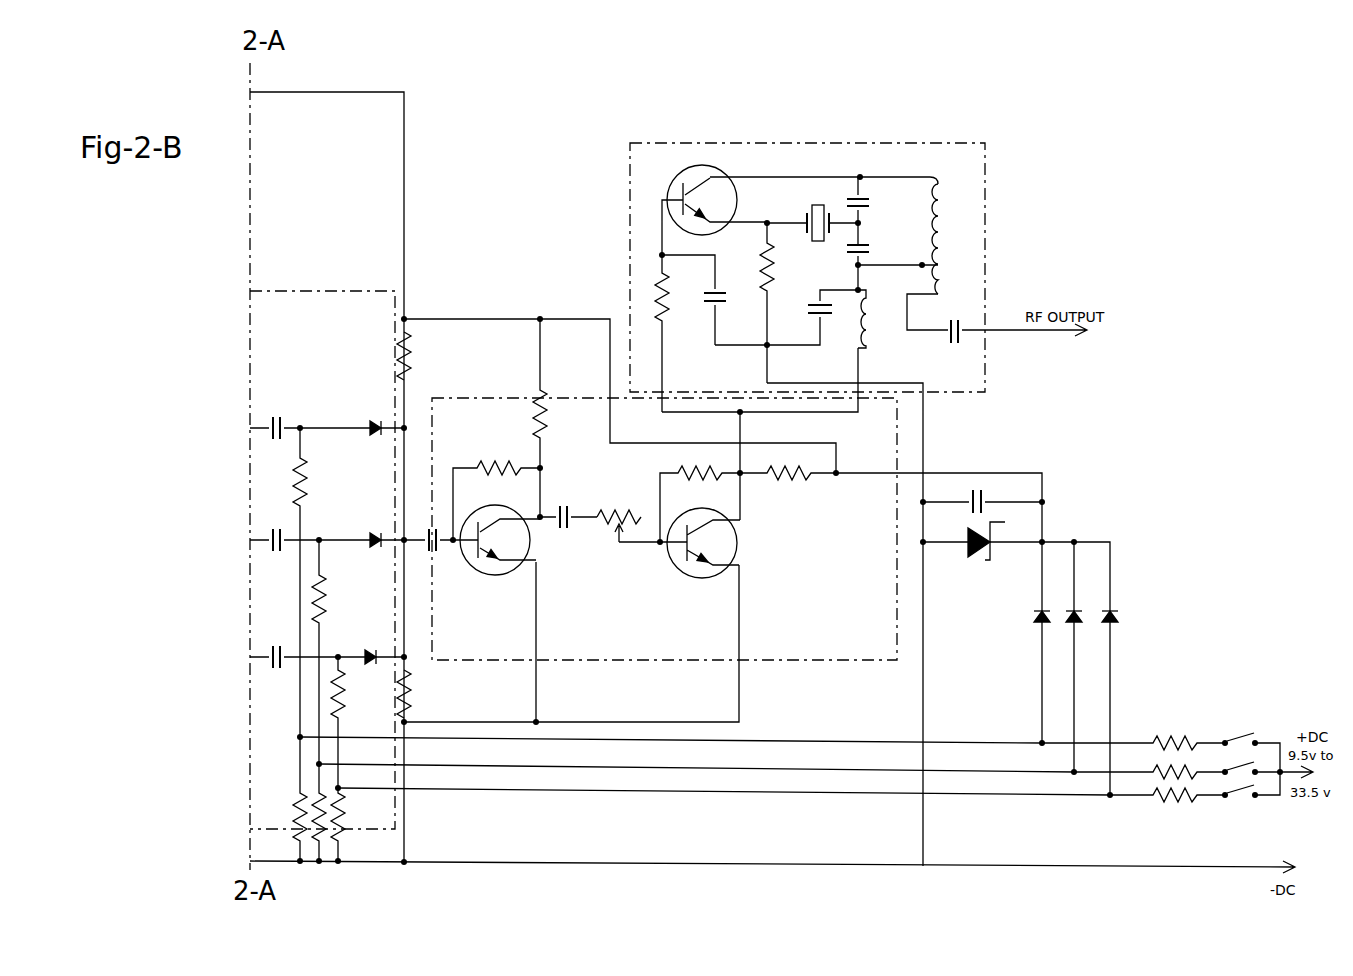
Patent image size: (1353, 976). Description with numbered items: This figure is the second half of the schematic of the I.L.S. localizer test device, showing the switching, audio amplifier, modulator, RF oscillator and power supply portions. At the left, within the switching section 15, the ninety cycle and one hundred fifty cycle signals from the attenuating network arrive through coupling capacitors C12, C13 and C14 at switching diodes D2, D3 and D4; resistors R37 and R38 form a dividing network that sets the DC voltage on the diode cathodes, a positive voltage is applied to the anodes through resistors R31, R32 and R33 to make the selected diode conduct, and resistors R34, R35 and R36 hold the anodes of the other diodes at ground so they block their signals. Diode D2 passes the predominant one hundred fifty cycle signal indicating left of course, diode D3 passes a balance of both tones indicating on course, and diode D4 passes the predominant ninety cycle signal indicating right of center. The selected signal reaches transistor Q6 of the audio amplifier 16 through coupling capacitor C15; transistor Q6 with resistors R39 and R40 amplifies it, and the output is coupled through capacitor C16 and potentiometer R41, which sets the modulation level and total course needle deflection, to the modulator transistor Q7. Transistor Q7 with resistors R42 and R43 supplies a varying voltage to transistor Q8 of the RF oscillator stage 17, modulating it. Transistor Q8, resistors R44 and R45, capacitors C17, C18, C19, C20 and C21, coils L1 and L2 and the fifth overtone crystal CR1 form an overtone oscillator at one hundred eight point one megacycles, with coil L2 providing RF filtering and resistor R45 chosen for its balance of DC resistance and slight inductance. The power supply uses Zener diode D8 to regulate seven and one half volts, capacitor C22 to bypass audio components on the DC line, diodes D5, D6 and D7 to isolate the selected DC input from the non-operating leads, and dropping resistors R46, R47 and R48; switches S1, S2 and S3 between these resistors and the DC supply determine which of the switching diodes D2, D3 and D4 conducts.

The frequency multiplier stage 15 is at (340, 288).
The audio amplifier 16 is at (793, 661).
The RF oscillator stage 17 is at (762, 142).
The coupling capacitor C12 is at (310, 414).
The coupling capacitor C13 is at (310, 528).
The coupling capacitor C14 is at (307, 644).
The coupling capacitor C15 is at (446, 554).
The capacitor C16 is at (568, 532).
The capacitor C17 is at (707, 300).
The capacitor C18 is at (807, 318).
The capacitor C19 is at (877, 210).
The capacitor C20 is at (878, 264).
The capacitor C21 is at (961, 323).
The capacitor C22 is at (982, 496).
The switching diode D2 is at (383, 412).
The switching diode D3 is at (393, 527).
The switching diode D4 is at (381, 642).
The diode D5 is at (1048, 605).
The diode D6 is at (1083, 606).
The diode D7 is at (1120, 607).
The Zener diode D8 is at (964, 555).
The resistor R31 is at (317, 582).
The resistor R32 is at (334, 652).
The resistor R33 is at (356, 722).
The resistor R34 is at (284, 799).
The resistor R35 is at (326, 842).
The resistor R36 is at (355, 824).
The resistor R37 is at (421, 694).
The resistor R38 is at (425, 356).
The resistor R39 is at (496, 490).
The resistor R40 is at (558, 418).
The potentiometer R41 is at (642, 516).
The resistor R42 is at (700, 493).
The resistor R43 is at (788, 485).
The resistor R44 is at (652, 333).
The resistor R45 is at (786, 303).
The dropping resistor R46 is at (1133, 734).
The dropping resistor R47 is at (1149, 765).
The dropping resistor R48 is at (1167, 807).
The transistor Q6 is at (500, 555).
The transistor Q7 is at (703, 557).
The transistor Q8 is at (714, 201).
The fifth overtone crystal CR1 is at (812, 212).
The coil L1 is at (925, 225).
The coil L2 is at (871, 319).
The switch S1 is at (1240, 733).
The switch S2 is at (1240, 762).
The switch S3 is at (1240, 803).